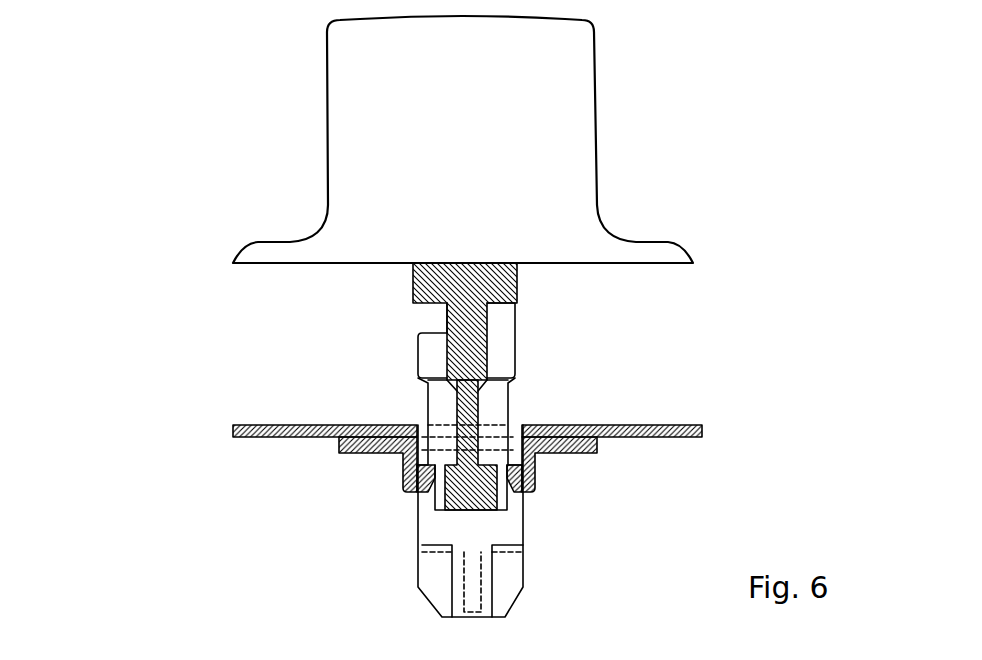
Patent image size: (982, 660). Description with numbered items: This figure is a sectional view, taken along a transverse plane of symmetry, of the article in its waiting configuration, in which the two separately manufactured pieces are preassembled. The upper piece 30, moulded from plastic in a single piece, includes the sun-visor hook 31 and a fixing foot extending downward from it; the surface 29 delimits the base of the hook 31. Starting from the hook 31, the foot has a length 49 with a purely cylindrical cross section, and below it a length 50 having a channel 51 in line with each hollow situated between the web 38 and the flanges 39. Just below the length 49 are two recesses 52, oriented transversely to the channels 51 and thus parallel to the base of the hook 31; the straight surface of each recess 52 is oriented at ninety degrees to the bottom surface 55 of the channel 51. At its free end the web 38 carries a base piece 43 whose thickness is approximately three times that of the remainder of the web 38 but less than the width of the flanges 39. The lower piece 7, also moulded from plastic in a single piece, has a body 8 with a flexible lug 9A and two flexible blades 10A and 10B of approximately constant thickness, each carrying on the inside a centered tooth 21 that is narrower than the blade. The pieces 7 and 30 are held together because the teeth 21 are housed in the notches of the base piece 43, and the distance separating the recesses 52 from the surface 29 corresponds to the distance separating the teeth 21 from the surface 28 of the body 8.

The piece 30 is at (700, 114).
The sun-visor hook 31 is at (472, 166).
The surface 29 is at (258, 272).
The length 50 is at (376, 342).
The length 49 is at (417, 280).
The recess 52 is at (430, 317).
The channel 51 is at (427, 352).
The bottom surface 55 is at (436, 367).
The surface 28 is at (262, 419).
The body 8 is at (673, 437).
The piece 7 is at (719, 413).
The flexible blade 10A is at (403, 470).
The flexible blade 10B is at (536, 462).
The web 38 is at (478, 395).
The flange 39 is at (494, 412).
The base piece 43 is at (476, 513).
The tooth 21 is at (421, 498).
The flexible lug 9A is at (432, 590).